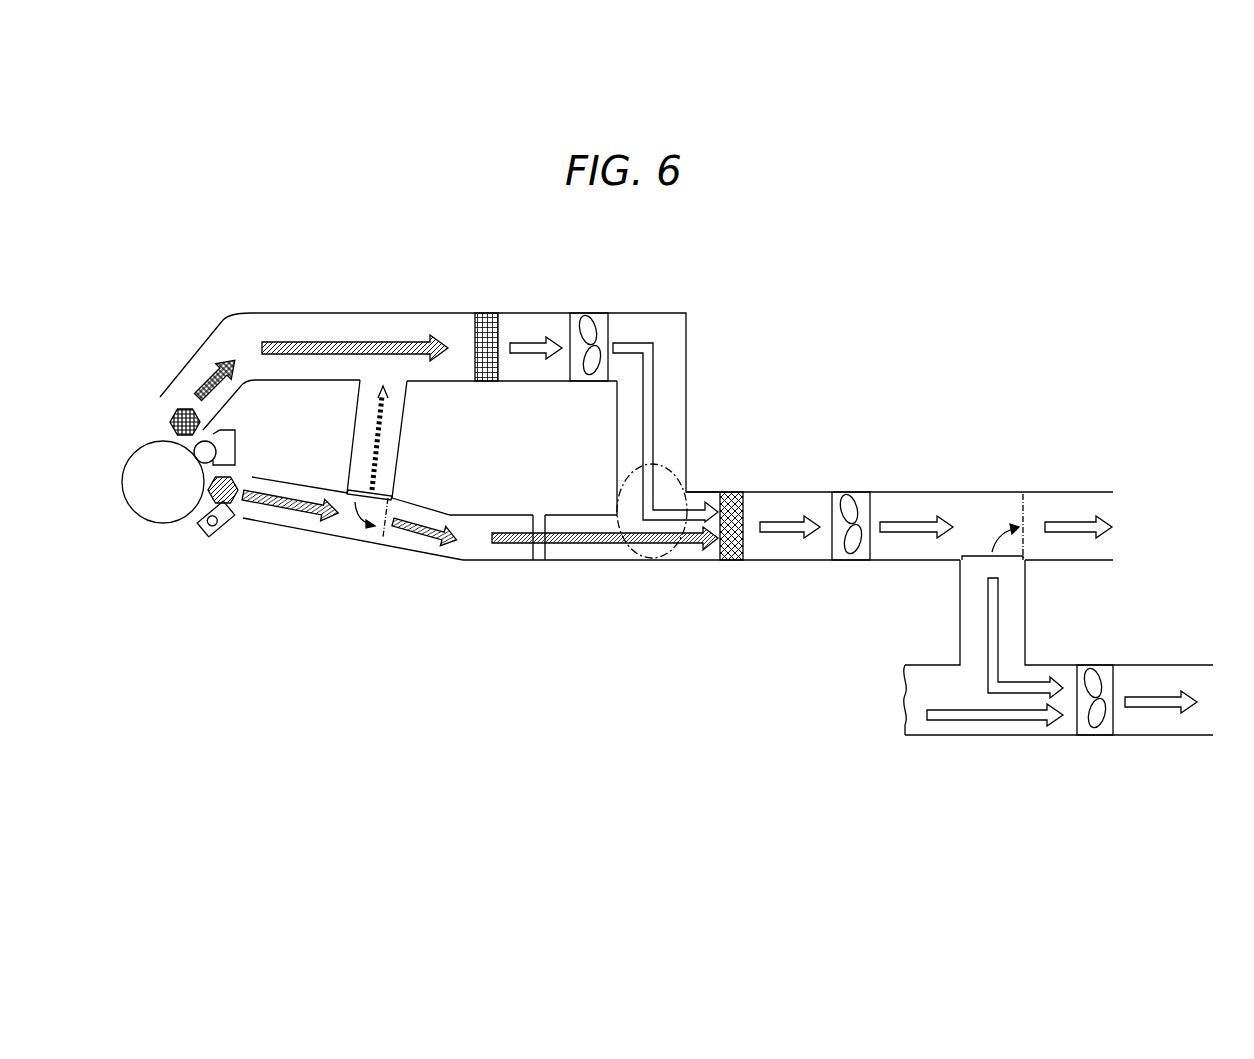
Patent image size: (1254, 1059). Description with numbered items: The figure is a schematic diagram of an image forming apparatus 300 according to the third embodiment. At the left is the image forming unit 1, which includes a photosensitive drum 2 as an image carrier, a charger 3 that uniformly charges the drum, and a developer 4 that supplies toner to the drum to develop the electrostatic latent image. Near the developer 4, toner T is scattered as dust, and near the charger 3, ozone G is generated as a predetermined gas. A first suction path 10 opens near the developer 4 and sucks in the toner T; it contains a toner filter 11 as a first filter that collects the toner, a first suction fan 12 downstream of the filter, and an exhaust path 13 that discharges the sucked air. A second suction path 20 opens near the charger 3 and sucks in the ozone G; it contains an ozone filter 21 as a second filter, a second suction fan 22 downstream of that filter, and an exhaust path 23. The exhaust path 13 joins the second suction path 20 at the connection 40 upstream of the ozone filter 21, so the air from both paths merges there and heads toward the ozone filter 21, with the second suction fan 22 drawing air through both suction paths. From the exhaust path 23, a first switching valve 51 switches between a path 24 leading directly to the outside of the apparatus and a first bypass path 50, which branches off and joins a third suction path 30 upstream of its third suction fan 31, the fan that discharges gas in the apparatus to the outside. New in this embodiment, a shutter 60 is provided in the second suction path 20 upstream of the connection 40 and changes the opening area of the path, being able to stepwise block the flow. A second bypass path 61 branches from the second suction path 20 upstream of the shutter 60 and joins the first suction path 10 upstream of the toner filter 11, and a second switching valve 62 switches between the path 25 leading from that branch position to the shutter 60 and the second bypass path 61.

The image forming apparatus 300 is at (158, 275).
The image forming unit 1 is at (127, 385).
The photosensitive drum 2 is at (134, 513).
The charger 3 is at (209, 530).
The developer 4 is at (235, 440).
The toner T is at (181, 408).
The ozone G is at (246, 480).
The first suction path 10 is at (422, 305).
The toner filter 11 is at (488, 309).
The first suction fan 12 is at (592, 309).
The exhaust path 13 is at (688, 380).
The second suction path 20 is at (496, 566).
The ozone filter 21 is at (732, 562).
The second suction fan 22 is at (845, 492).
The exhaust path 23 is at (908, 492).
The path 24 is at (1072, 492).
The path 25 is at (444, 562).
The third suction path 30 is at (950, 737).
The third suction fan 31 is at (1093, 737).
The connection 40 is at (632, 562).
The first bypass path 50 is at (1027, 607).
The first switching valve 51 is at (980, 558).
The shutter 60 is at (540, 514).
The second bypass path 61 is at (407, 423).
The second switching valve 62 is at (379, 497).